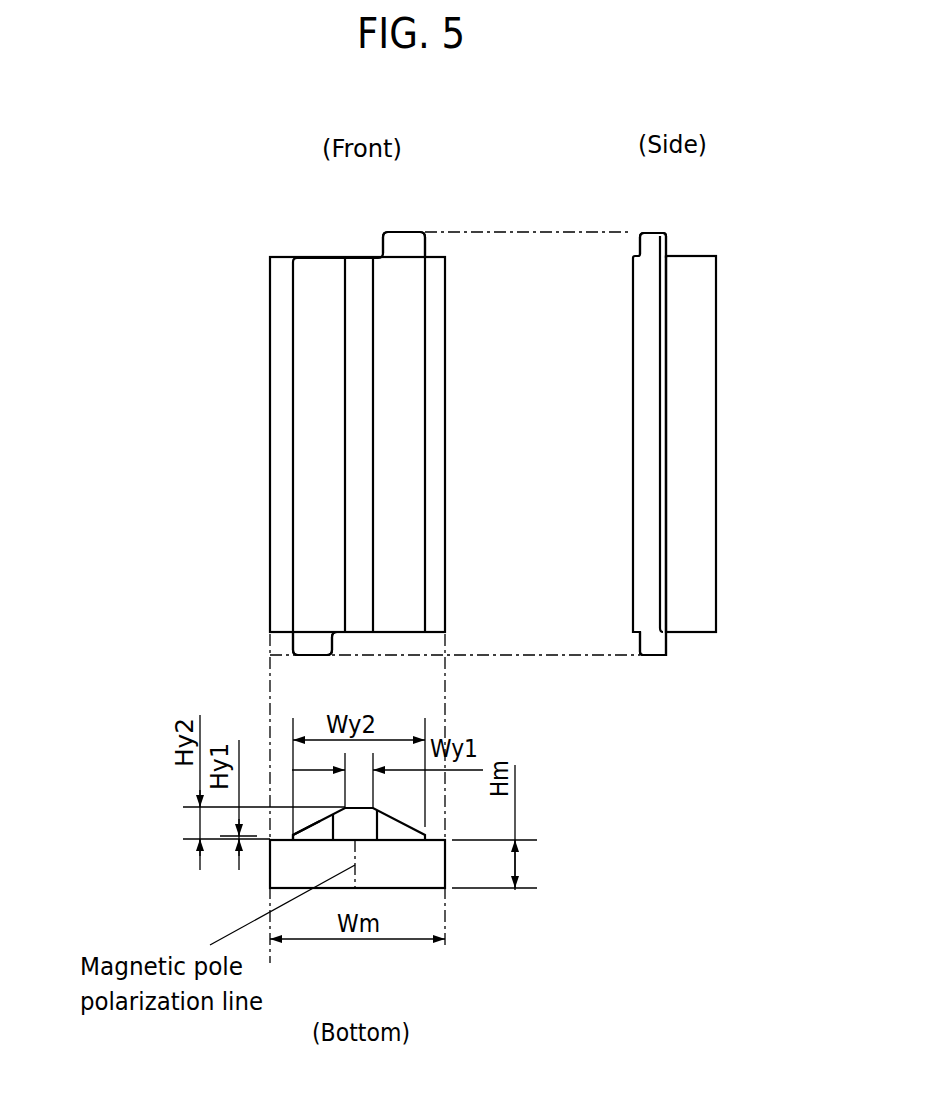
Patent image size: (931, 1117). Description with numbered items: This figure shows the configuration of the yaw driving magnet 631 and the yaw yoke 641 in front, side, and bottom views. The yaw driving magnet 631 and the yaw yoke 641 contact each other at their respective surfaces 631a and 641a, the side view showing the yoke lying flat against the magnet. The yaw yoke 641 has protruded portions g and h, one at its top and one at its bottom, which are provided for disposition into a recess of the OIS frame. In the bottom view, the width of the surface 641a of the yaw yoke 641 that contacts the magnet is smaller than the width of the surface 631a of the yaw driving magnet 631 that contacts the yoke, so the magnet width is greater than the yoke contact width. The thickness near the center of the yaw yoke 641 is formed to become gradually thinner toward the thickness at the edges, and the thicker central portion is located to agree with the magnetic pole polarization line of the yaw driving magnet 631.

The yaw driving magnet 631 is at (282, 313).
The surface of yaw driving magnet 631a is at (667, 442).
The yaw yoke 641 is at (360, 300).
The surface of yaw yoke 641a is at (663, 395).
The protruded portion g is at (404, 245).
The protruded portion h is at (312, 643).